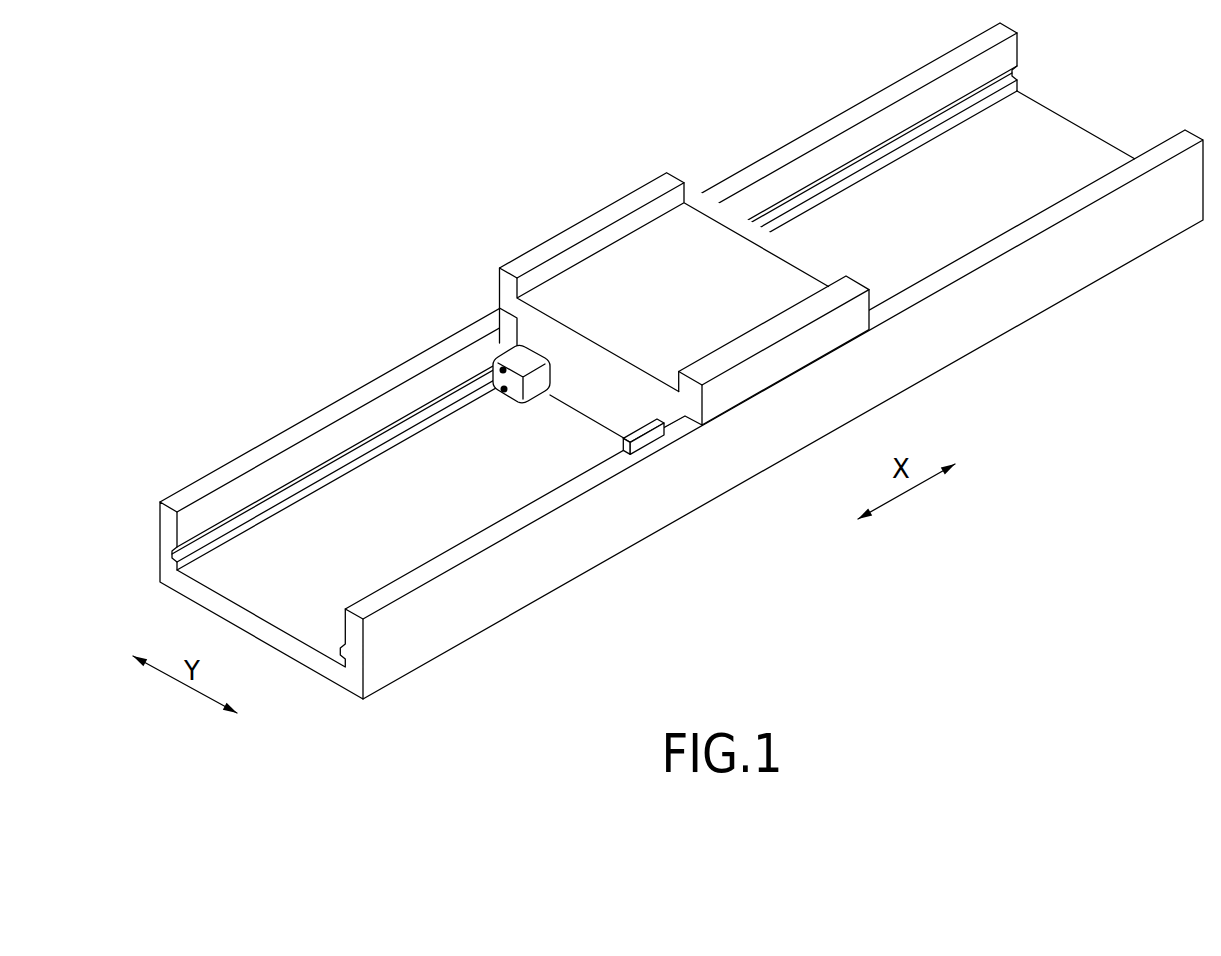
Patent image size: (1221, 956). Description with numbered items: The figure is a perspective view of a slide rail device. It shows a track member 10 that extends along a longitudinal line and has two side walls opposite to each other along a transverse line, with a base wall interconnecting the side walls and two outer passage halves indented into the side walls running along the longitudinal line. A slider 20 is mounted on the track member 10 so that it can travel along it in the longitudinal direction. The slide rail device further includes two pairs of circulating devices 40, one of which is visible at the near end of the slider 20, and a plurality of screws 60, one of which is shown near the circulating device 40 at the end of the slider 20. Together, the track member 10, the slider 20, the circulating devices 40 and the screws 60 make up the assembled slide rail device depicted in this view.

The track member 10 is at (267, 438).
The slider 20 is at (575, 224).
The circulating device 40 is at (508, 352).
The screw 60 is at (483, 369).